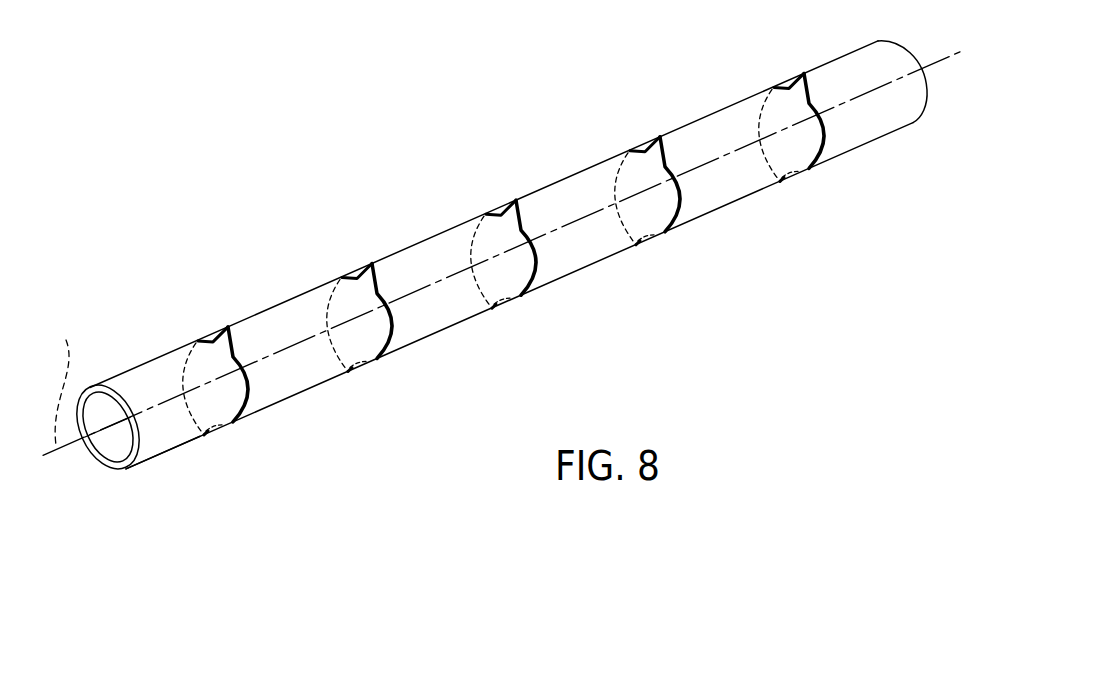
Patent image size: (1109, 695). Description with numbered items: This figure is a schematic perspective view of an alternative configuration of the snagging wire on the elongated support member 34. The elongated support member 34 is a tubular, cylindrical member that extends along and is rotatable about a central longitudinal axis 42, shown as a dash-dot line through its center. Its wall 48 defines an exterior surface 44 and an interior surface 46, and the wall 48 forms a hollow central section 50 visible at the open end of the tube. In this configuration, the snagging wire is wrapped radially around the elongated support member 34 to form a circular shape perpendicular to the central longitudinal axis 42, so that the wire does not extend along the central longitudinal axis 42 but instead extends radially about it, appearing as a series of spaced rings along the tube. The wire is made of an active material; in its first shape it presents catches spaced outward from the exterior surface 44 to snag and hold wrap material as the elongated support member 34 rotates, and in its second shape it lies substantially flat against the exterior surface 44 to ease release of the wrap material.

The elongated support member 34 is at (735, 104).
The central longitudinal axis 42 is at (57, 377).
The exterior surface 44 is at (145, 450).
The interior surface 46 is at (110, 461).
The wall 48 is at (92, 453).
The hollow central section 50 is at (102, 413).